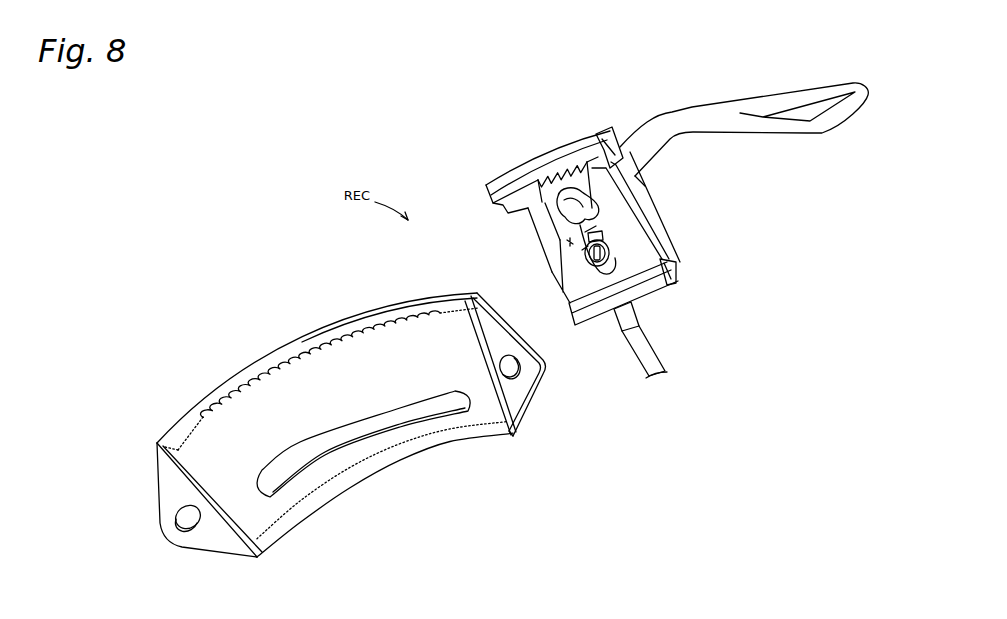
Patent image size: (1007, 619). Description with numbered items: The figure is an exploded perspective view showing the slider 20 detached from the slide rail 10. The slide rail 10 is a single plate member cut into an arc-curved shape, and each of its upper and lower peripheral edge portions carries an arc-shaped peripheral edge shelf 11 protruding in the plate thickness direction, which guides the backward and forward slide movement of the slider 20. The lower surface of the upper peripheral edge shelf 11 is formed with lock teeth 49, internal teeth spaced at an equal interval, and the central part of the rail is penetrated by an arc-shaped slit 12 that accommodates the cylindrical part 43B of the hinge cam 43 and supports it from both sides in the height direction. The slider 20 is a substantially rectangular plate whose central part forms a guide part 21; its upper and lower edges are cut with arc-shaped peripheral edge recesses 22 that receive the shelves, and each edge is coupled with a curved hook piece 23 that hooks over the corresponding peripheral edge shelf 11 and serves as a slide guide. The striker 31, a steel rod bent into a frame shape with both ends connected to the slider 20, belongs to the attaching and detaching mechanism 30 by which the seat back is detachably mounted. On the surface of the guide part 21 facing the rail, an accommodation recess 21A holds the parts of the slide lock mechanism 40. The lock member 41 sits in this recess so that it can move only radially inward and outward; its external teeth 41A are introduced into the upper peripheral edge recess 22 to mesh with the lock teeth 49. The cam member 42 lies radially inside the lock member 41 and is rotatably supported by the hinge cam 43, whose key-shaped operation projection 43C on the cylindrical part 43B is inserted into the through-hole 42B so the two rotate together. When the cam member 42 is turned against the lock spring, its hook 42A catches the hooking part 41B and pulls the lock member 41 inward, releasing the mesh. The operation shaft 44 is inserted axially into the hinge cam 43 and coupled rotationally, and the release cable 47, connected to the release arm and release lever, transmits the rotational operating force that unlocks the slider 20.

The slide rail 10 is at (335, 321).
The peripheral edge shelf 11 is at (250, 373).
The slit 12 is at (305, 455).
The slider 20 is at (562, 142).
The guide part 21 is at (645, 242).
The accommodation recess 21A is at (558, 257).
The peripheral edge recess 22 is at (612, 140).
The hook piece 23 is at (517, 180).
The attaching and detaching mechanism 30 is at (744, 134).
The striker 31 is at (770, 124).
The slide lock mechanism 40 is at (555, 238).
The lock member 41 is at (589, 183).
The external teeth 41A is at (556, 176).
The hooking part 41B is at (552, 225).
The cam member 42 is at (602, 223).
The hook 42A is at (580, 198).
The through-hole 42B is at (602, 233).
The hinge cam 43 is at (597, 253).
The cylindrical part 43B is at (610, 252).
The operation projection 43C is at (600, 237).
The operation shaft 44 is at (582, 250).
The release cable 47 is at (655, 357).
The lock teeth 49 is at (297, 367).